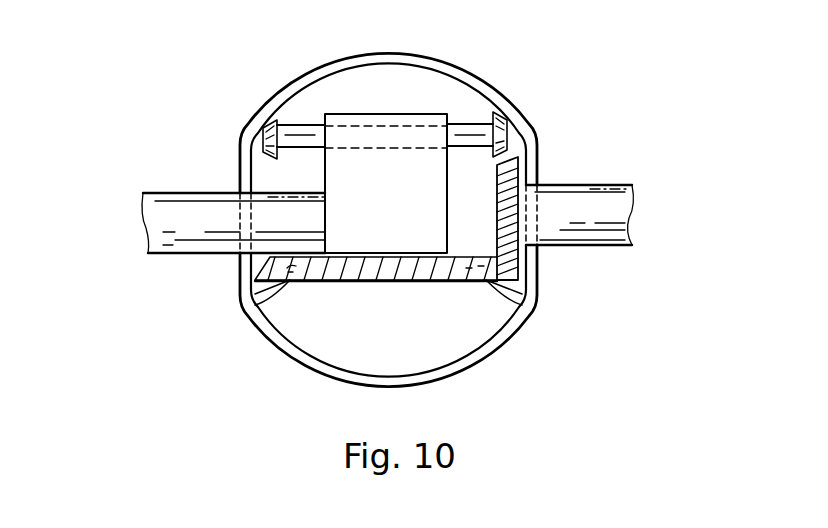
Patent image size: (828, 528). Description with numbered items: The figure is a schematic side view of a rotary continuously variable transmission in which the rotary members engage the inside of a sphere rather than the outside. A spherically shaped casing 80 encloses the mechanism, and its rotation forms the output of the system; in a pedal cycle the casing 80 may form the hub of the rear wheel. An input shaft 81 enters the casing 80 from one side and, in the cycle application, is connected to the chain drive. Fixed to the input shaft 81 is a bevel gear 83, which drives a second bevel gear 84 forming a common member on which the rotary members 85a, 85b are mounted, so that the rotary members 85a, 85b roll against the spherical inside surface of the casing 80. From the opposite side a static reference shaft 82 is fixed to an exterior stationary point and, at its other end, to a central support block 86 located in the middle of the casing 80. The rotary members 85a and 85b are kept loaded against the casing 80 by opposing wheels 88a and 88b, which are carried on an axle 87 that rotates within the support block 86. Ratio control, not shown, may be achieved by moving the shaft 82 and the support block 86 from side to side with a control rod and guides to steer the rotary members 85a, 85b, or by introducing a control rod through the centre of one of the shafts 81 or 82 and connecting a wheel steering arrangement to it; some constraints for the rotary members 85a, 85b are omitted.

The casing 80 is at (287, 77).
The input shaft 81 is at (575, 180).
The static reference shaft 82 is at (208, 258).
The bevel gear 83 is at (530, 260).
The bevel gear 84 is at (385, 287).
The rotary member 85a is at (493, 290).
The rotary member 85b is at (282, 297).
The central support block 86 is at (388, 112).
The axle 87 is at (298, 156).
The opposing wheel 88a is at (512, 131).
The opposing wheel 88b is at (260, 141).